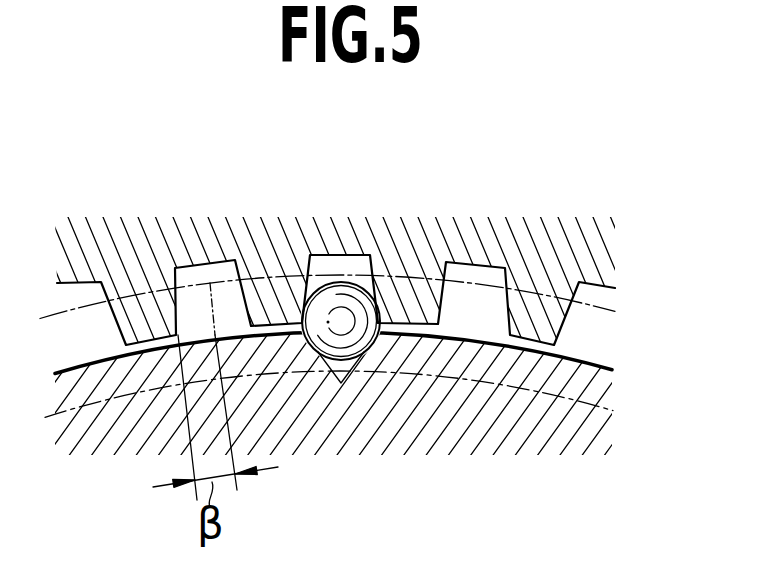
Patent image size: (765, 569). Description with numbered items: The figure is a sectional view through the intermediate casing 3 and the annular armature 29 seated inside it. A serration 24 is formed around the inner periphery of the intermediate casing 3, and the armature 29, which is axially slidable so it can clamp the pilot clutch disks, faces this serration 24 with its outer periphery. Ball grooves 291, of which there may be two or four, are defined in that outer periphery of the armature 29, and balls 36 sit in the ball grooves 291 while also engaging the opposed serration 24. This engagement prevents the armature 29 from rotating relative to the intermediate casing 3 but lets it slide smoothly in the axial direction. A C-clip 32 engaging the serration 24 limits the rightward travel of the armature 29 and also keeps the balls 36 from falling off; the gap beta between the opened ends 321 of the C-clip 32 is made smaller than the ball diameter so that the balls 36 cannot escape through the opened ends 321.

The intermediate casing 3 is at (116, 218).
The serration 24 is at (235, 260).
The balls 36 is at (343, 304).
The annular armature 29 is at (588, 363).
The ball grooves 291 is at (341, 384).
The C-clip 32 is at (460, 380).
The opened ends 321 is at (200, 368).